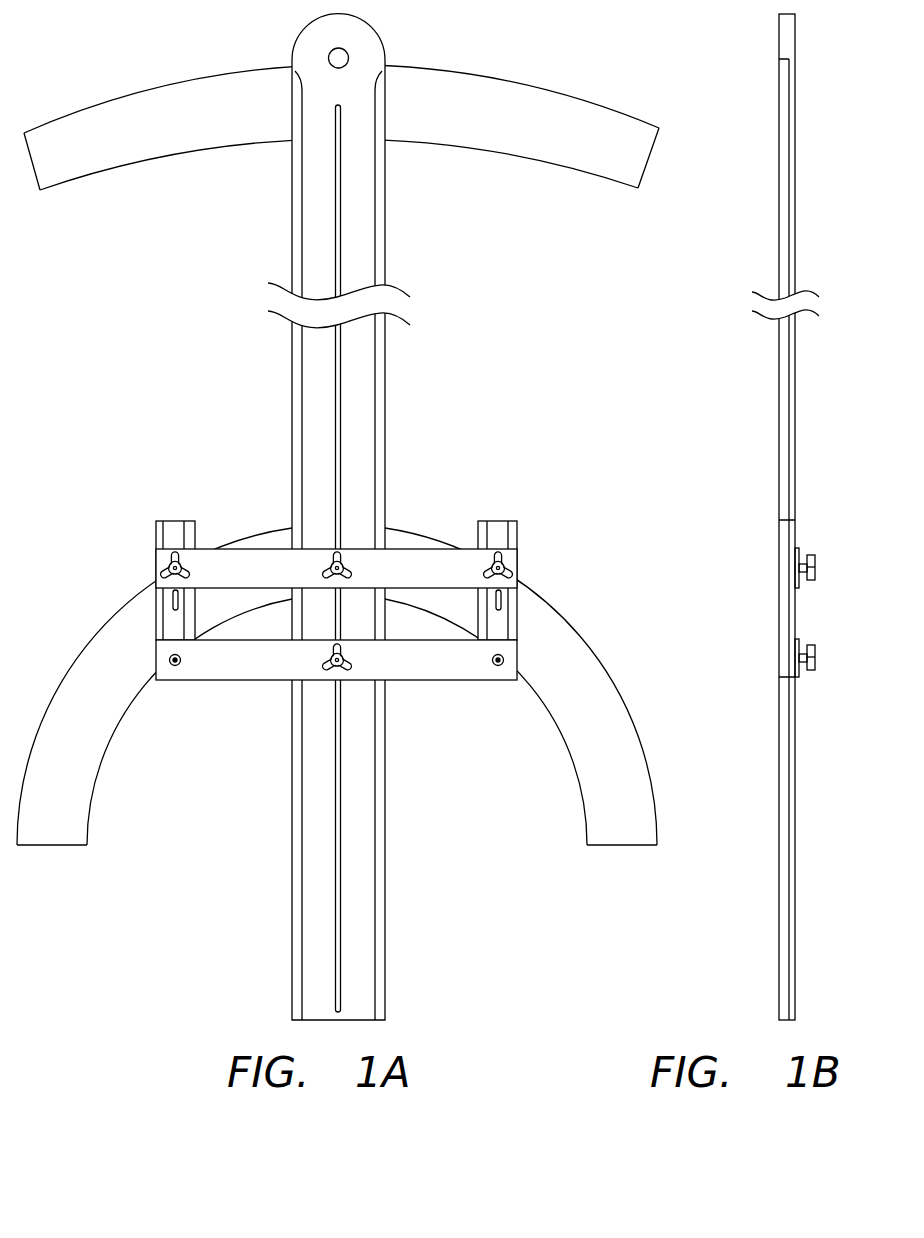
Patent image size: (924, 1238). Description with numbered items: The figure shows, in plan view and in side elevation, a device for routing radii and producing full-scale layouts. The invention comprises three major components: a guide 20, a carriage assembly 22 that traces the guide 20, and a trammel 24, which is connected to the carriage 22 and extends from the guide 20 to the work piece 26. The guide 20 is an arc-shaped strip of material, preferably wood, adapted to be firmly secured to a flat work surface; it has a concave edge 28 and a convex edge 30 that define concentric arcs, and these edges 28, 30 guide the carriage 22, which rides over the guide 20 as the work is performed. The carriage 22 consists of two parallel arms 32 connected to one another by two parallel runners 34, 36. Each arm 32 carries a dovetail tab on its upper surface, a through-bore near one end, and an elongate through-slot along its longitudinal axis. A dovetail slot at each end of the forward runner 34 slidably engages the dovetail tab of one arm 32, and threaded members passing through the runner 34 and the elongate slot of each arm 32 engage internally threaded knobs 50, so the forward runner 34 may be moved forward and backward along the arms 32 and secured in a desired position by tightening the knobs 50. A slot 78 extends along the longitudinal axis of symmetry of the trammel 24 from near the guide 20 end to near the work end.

In FIG. 1A, the guide 20 is at (73, 790).
In FIG. 1A, the carriage assembly 22 is at (319, 597).
In FIG. 1A, the trammel 24 is at (368, 517).
In FIG. 1B, the trammel 24 is at (793, 388).
In FIG. 1A, the work piece 26 is at (478, 96).
In FIG. 1A, the concave edge 28 is at (364, 686).
In FIG. 1A, the convex edge 30 is at (610, 678).
In FIG. 1A, the arm 32 is at (189, 520).
In FIG. 1B, the arm 32 is at (787, 583).
In FIG. 1A, the forward runner 34 is at (510, 563).
In FIG. 1B, the forward runner 34 is at (797, 568).
In FIG. 1A, the runner 36 is at (427, 665).
In FIG. 1B, the runner 36 is at (797, 658).
In FIG. 1B, the internally threaded knob 50 is at (818, 655).
In FIG. 1A, the slot 78 is at (338, 200).